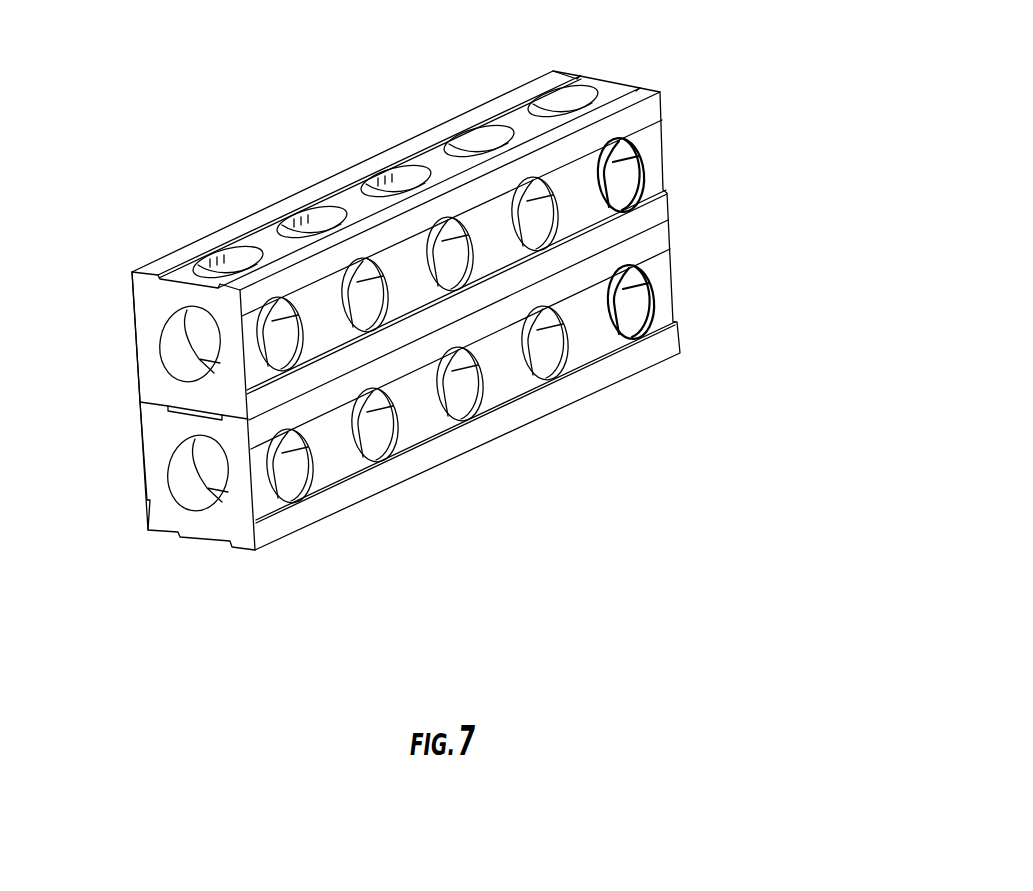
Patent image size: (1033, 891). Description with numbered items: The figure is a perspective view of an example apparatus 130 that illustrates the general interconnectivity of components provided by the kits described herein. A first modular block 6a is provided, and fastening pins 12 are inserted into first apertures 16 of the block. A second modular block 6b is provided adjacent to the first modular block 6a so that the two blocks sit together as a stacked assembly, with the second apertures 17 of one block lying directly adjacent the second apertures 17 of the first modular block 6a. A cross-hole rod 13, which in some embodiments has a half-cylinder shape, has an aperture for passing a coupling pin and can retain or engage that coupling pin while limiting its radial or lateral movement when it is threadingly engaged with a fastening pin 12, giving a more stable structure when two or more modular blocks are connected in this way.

The first modular block 6a is at (150, 514).
The second modular block 6b is at (131, 271).
The fastening pin 12 is at (627, 303).
The cross-hole rod 13 is at (620, 170).
The first aperture 16 is at (625, 190).
The second aperture 17 is at (223, 260).
The apparatus 130 is at (644, 478).